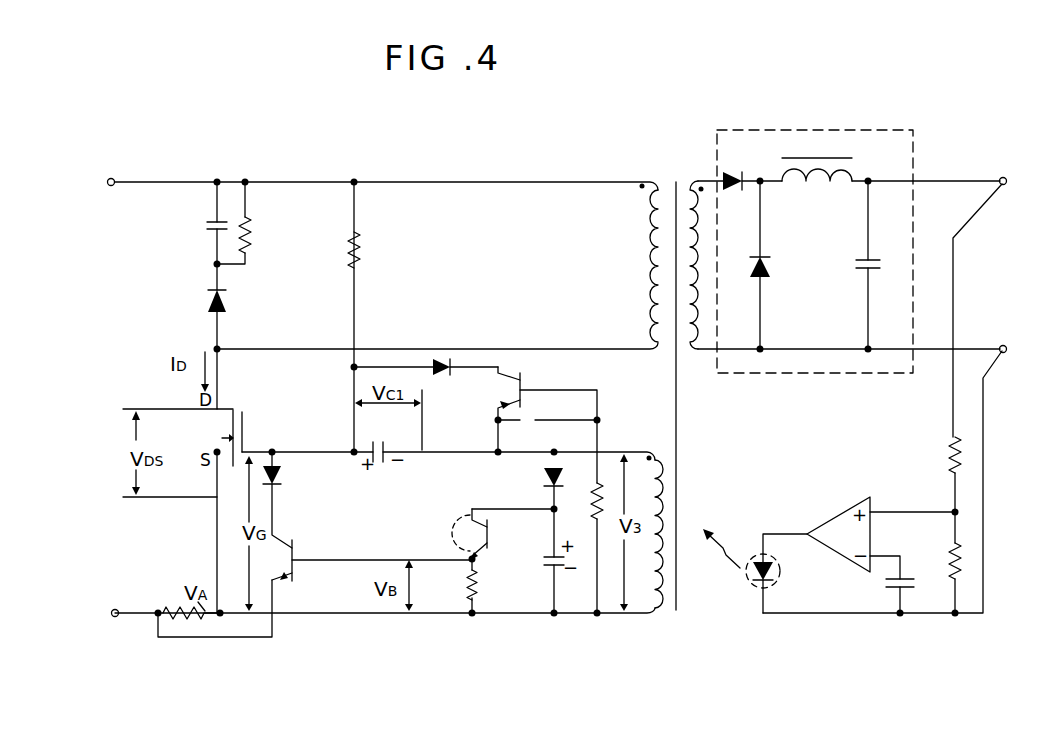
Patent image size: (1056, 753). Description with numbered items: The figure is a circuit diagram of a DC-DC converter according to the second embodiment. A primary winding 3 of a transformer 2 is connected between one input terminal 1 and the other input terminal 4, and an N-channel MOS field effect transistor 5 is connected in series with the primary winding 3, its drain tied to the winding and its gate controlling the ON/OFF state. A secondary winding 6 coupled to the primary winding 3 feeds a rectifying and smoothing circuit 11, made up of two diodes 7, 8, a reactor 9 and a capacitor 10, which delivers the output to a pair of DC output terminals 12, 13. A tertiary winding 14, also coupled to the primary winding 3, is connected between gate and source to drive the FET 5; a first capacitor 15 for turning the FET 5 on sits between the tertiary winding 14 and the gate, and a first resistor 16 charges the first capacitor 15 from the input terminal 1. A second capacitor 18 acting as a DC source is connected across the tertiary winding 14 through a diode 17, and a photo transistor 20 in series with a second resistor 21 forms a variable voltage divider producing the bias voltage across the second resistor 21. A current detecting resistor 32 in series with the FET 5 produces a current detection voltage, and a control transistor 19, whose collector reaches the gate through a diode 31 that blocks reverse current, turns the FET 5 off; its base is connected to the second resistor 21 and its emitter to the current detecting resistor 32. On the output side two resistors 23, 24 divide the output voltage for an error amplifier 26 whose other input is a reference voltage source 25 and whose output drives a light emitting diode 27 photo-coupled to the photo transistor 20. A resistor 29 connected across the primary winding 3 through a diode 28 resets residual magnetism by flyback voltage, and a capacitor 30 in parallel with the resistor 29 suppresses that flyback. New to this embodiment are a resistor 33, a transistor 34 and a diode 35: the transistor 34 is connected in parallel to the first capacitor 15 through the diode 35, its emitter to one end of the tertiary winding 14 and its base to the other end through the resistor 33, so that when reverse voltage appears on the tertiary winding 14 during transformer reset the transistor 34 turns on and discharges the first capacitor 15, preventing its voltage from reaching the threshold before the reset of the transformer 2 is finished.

The input terminal 1 is at (112, 178).
The transformer 2 is at (672, 180).
The primary winding 3 is at (648, 212).
The input terminal 4 is at (115, 609).
The N-channel MOS field effect transistor 5 is at (226, 430).
The secondary winding 6 is at (700, 351).
The diode 7 is at (744, 172).
The diode 8 is at (764, 277).
The reactor 9 is at (818, 184).
The capacitor 10 is at (863, 269).
The rectifying and smoothing circuit 11 is at (915, 170).
The DC output terminal 12 is at (1003, 177).
The DC output terminal 13 is at (1003, 345).
The tertiary winding 14 is at (659, 614).
The first capacitor 15 is at (386, 448).
The first resistor 16 is at (356, 234).
The diode 17 is at (547, 484).
The second capacitor 18 is at (549, 568).
The control transistor 19 is at (294, 546).
The photo transistor 20 is at (492, 537).
The second resistor 21 is at (477, 581).
The resistor 23 is at (951, 462).
The resistor 24 is at (950, 560).
The reference voltage source 25 is at (912, 587).
The error amplifier 26 is at (858, 497).
The light emitting diode 27 is at (779, 574).
The diode 28 is at (214, 290).
The resistor 29 is at (249, 232).
The capacitor 30 is at (212, 222).
The diode 31 is at (285, 481).
The current detecting resistor 32 is at (168, 609).
The resistor 33 is at (596, 510).
The transistor 34 is at (524, 380).
The diode 35 is at (452, 372).